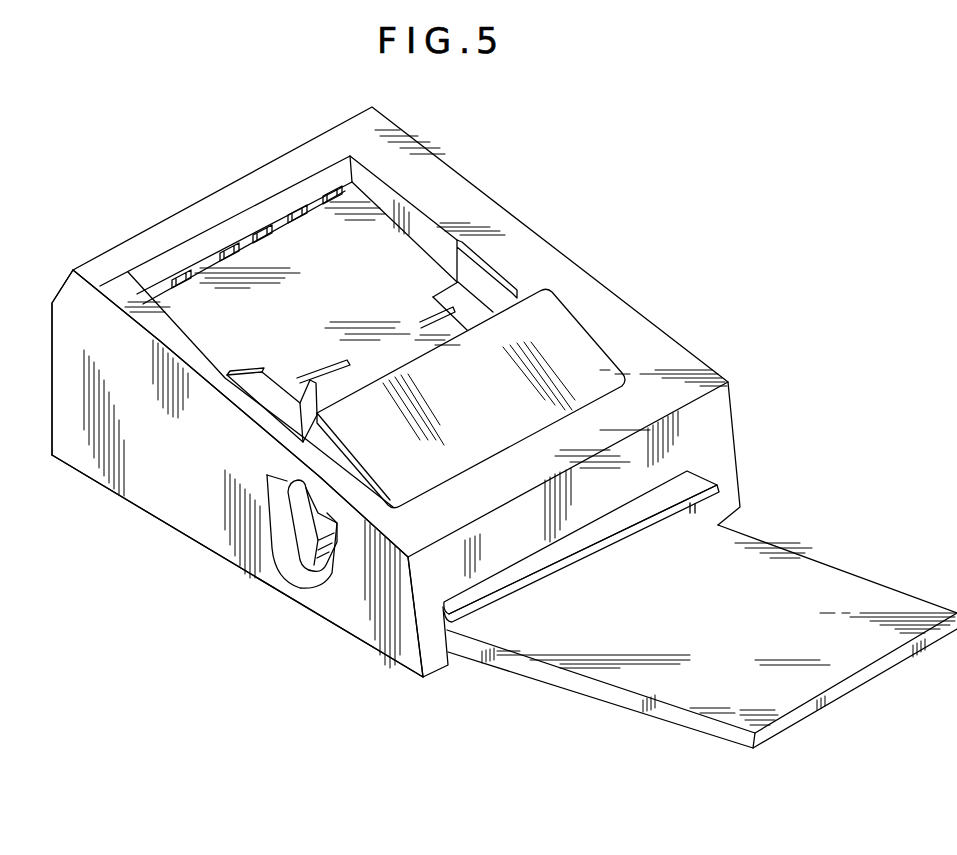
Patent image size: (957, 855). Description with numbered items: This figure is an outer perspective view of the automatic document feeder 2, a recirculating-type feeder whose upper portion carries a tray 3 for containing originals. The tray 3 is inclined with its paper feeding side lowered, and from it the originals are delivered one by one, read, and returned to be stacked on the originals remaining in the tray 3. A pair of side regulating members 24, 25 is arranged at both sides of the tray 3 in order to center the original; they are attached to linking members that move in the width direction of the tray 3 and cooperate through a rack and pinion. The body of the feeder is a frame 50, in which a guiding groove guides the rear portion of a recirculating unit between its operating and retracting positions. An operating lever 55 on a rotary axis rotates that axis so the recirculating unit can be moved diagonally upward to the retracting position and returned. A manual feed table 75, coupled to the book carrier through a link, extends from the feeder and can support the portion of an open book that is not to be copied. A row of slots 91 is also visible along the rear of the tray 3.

The automatic document feeder 2 is at (690, 345).
The tray 3 is at (329, 298).
The side regulating member 24 is at (276, 393).
The side regulating member 25 is at (480, 277).
The frame 50 is at (150, 484).
The operating lever 55 is at (300, 555).
The manual feed table 75 is at (708, 634).
The slots 91 is at (187, 280).